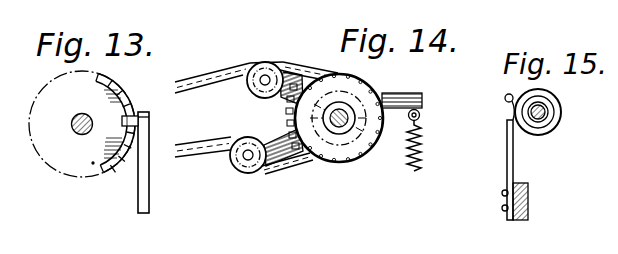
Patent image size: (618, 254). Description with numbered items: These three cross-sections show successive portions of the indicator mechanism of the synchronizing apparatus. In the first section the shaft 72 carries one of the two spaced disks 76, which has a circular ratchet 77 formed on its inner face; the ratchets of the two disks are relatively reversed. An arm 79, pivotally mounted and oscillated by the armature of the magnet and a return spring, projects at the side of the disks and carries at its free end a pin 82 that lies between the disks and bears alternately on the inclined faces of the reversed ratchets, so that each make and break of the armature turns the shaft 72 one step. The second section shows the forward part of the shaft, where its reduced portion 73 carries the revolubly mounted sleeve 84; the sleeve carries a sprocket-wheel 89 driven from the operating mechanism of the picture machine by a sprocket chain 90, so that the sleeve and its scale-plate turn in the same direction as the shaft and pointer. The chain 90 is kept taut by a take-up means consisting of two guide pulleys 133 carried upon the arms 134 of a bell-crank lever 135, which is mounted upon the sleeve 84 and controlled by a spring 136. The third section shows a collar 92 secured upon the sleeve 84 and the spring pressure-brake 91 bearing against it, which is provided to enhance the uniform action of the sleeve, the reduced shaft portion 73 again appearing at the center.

In FIG. 13, the shaft 72 is at (70, 139).
In FIG. 14, the reduced portion of the shaft 73 is at (352, 122).
In FIG. 15, the reduced portion of the shaft 73 is at (526, 127).
In FIG. 13, the disk 76 is at (82, 124).
In FIG. 13, the ratchet 77 is at (119, 169).
In FIG. 13, the arm 79 is at (150, 128).
In FIG. 13, the pin 82 is at (135, 114).
In FIG. 14, the sleeve 84 is at (339, 126).
In FIG. 15, the sleeve 84 is at (546, 118).
In FIG. 14, the sprocket-wheel 89 is at (354, 148).
In FIG. 14, the sprocket chain 90 is at (222, 74).
In FIG. 15, the spring pressure-brake 91 is at (514, 155).
In FIG. 15, the collar 92 is at (560, 112).
In FIG. 14, the guide pulley 133 is at (270, 77).
In FIG. 14, the arm of the bell-crank lever 134 is at (282, 101).
In FIG. 14, the bell-crank lever 135 is at (409, 99).
In FIG. 14, the spring 136 is at (422, 141).